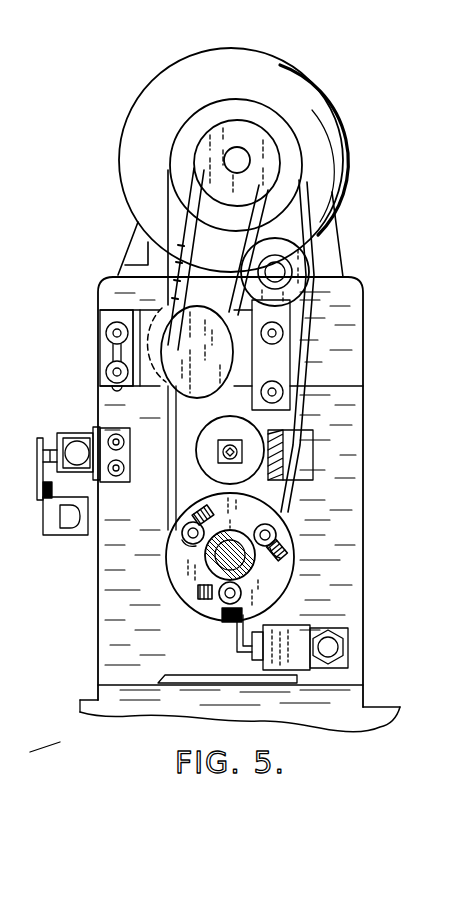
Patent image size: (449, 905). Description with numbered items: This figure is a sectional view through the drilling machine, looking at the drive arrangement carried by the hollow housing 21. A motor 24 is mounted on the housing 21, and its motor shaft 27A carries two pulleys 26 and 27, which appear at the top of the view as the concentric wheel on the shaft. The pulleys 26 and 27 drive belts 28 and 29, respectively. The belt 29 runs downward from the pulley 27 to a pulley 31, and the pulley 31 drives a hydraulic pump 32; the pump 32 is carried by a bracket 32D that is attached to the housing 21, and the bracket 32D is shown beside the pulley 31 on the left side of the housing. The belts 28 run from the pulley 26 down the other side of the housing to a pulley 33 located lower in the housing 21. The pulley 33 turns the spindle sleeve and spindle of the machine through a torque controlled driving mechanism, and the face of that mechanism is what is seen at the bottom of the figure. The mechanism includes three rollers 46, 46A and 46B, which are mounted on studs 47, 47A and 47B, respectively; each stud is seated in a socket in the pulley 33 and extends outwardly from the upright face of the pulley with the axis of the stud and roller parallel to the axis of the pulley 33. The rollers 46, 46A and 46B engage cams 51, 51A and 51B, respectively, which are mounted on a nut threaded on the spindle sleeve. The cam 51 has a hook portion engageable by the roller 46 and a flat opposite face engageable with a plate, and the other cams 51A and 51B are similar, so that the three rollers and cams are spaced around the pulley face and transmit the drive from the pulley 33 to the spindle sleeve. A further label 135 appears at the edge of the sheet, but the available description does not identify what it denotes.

The housing 21 is at (348, 443).
The motor 24 is at (288, 92).
The pulley 26 is at (215, 115).
The pulley 27 is at (270, 170).
The motor shaft 27A is at (250, 148).
The belts 28 is at (303, 200).
The belt 29 is at (188, 225).
The pulley 31 is at (200, 307).
The hydraulic pump 32 is at (103, 390).
The bracket 32D is at (153, 317).
The pulley 33 is at (212, 610).
The roller 46 is at (245, 590).
The roller 46A is at (200, 596).
The roller 46B is at (272, 528).
The stud 47 is at (213, 608).
The stud 47A is at (198, 540).
The stud 47B is at (282, 546).
The cam 51 is at (172, 590).
The cam 51A is at (184, 526).
The cam 51B is at (285, 556).
The element 135 is at (30, 752).